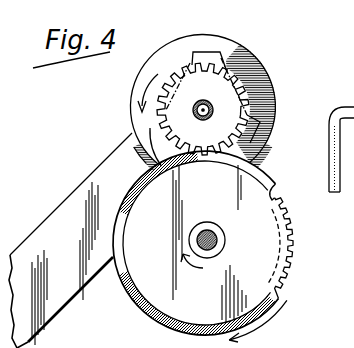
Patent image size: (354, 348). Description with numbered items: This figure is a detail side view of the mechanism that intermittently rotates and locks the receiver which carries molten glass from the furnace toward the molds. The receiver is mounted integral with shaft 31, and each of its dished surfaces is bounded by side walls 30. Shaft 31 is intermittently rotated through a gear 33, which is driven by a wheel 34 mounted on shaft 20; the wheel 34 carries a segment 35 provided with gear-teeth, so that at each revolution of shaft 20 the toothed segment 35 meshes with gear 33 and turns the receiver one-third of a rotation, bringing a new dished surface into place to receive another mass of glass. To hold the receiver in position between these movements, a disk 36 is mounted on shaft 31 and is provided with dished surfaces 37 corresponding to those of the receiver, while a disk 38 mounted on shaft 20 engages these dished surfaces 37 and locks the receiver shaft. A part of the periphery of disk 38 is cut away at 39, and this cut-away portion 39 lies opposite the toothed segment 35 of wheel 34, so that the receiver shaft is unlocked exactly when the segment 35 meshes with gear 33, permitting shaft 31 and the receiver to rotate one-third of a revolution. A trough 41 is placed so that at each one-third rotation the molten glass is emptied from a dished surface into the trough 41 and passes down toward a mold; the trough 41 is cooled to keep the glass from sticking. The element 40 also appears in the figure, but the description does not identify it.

The shaft 20 is at (218, 247).
The bounding side walls 30 is at (214, 41).
The shaft 31 is at (214, 114).
The gear 33 is at (258, 100).
The wheel 34 is at (278, 294).
The segment 35 is at (294, 239).
The disk 36 is at (222, 55).
The dished surfaces 37 is at (264, 70).
The disk 38 is at (133, 300).
The cut-away portion 39 is at (283, 201).
The arm 40 is at (345, 172).
The trough 41 is at (70, 240).